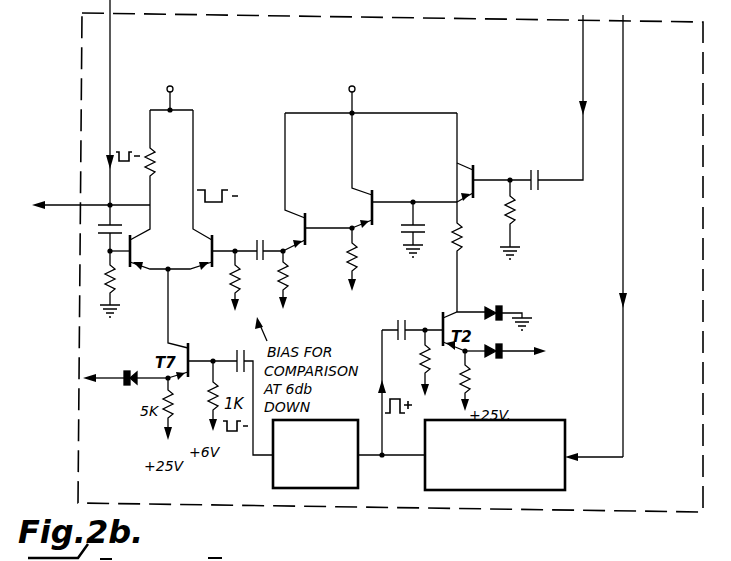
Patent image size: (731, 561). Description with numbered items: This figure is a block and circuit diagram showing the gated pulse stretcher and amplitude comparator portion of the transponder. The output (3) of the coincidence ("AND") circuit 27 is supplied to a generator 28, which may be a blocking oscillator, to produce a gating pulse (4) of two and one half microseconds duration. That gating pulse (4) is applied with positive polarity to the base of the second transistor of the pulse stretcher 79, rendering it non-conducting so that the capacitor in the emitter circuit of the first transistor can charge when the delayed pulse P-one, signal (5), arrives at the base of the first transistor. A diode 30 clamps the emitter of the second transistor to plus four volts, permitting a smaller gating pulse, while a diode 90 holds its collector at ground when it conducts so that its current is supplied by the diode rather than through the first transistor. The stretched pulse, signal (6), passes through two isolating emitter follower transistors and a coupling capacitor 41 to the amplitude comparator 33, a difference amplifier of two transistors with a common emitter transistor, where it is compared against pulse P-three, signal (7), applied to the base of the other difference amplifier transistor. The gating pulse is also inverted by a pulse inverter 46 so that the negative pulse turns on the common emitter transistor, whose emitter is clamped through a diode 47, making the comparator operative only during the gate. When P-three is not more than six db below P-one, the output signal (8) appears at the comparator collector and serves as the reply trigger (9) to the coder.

The amplitude comparator 33 is at (212, 84).
The pulse stretcher 79 is at (470, 86).
The coupling capacitor 41 is at (259, 236).
The diode 47 is at (127, 372).
The pulse inverter 46 is at (358, 472).
The generator 28 is at (526, 420).
The diode 30 is at (493, 358).
The diode 90 is at (494, 307).
The coincidence circuit 27 is at (623, 405).
The output of the coincidence circuit 3 is at (594, 447).
The gating pulse 4 is at (410, 387).
The delayed pulse P1 signal 5 is at (562, 97).
The stretched pulse P1 signal 6 is at (287, 254).
The pulse P3 signal 7 is at (123, 102).
The output signal 8 is at (130, 196).
The reply trigger 9 is at (61, 187).